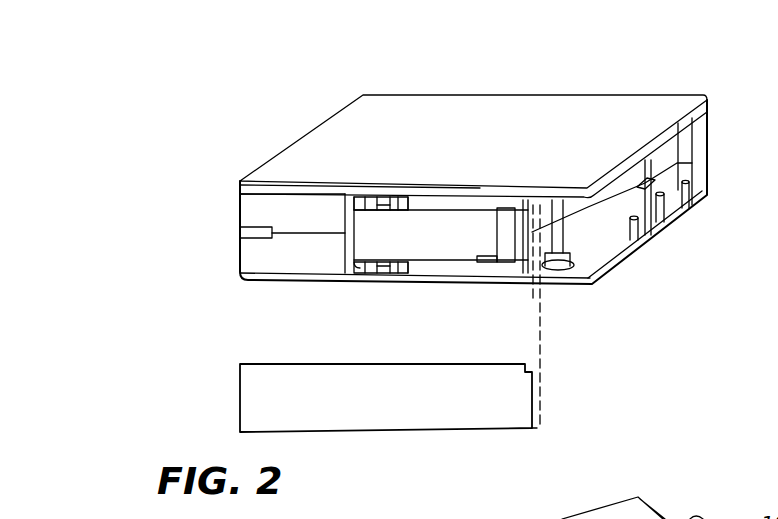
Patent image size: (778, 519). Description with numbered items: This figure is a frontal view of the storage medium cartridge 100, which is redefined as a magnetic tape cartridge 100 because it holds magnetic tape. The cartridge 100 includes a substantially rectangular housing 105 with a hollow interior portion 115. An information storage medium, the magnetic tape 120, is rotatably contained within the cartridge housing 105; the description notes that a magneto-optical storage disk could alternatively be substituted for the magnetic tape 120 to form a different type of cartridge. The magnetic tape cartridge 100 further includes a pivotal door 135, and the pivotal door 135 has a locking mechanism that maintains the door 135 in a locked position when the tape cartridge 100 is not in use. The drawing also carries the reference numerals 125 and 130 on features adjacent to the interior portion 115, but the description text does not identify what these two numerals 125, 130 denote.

The storage medium cartridge 100 is at (205, 235).
The housing 105 is at (422, 110).
The hollow interior portion 115 is at (480, 255).
The magnetic tape 120 is at (417, 260).
The card bay / slot 125 is at (437, 243).
The upper card guide rail 130 is at (361, 197).
The pivotal door 135 is at (260, 408).